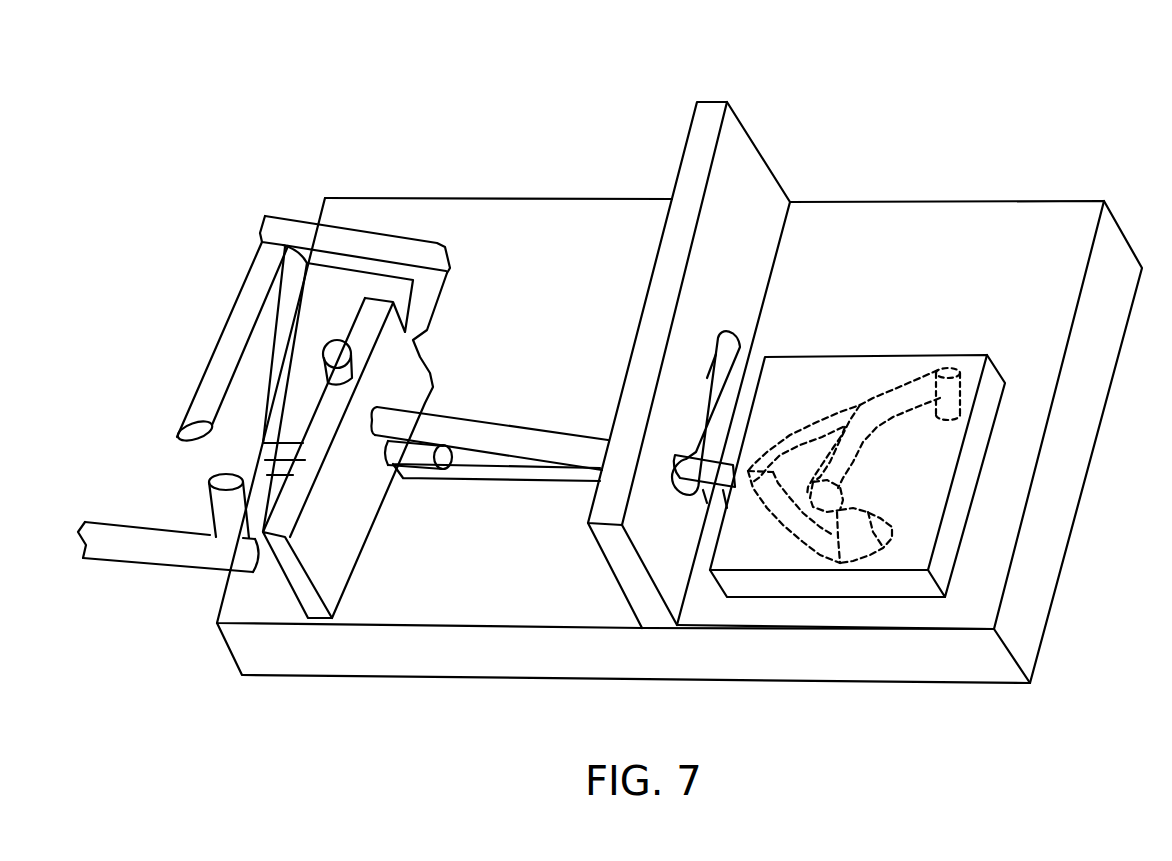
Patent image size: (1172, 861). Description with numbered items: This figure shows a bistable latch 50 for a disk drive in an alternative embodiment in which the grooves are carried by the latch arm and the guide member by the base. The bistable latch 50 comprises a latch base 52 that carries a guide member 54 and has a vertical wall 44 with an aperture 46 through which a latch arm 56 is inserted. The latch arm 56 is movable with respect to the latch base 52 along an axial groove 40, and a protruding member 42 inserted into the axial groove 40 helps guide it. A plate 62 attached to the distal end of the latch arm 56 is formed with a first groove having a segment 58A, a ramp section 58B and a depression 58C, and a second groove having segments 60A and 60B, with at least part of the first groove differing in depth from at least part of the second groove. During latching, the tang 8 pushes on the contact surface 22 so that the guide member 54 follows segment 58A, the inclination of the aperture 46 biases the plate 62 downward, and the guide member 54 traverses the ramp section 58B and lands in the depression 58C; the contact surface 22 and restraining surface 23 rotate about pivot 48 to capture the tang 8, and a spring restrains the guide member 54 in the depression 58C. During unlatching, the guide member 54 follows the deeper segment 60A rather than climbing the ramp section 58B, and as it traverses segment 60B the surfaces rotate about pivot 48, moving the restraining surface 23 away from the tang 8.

The bistable latch 50 is at (243, 102).
The latch base 52 is at (993, 201).
The vertical wall 44 is at (748, 157).
The plate 62 is at (876, 355).
The guide member 54 is at (952, 407).
The first groove segment 58A is at (893, 418).
The ramp section 58B is at (840, 493).
The depression 58C is at (850, 508).
The second groove segment 60A is at (793, 527).
The second groove segment 60B is at (807, 430).
The aperture 46 is at (713, 350).
The latch arm 56 is at (503, 428).
The axial groove 40 is at (512, 473).
The protruding member 42 is at (405, 473).
The contact surface 22 is at (281, 577).
The restraining surface 23 is at (241, 369).
The pivot 48 is at (337, 342).
The tang 8 is at (118, 552).